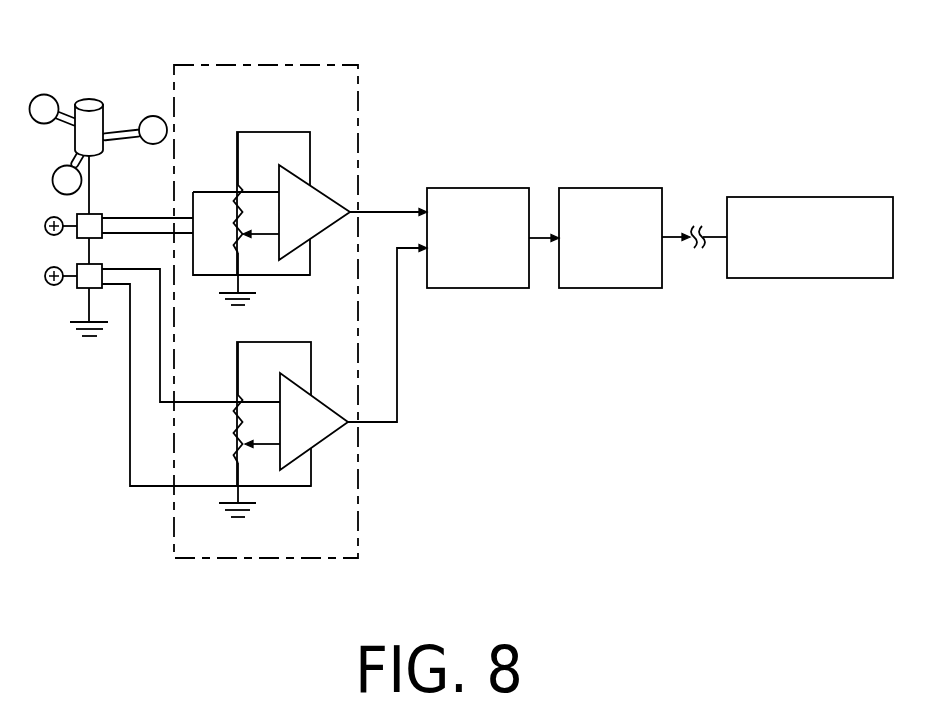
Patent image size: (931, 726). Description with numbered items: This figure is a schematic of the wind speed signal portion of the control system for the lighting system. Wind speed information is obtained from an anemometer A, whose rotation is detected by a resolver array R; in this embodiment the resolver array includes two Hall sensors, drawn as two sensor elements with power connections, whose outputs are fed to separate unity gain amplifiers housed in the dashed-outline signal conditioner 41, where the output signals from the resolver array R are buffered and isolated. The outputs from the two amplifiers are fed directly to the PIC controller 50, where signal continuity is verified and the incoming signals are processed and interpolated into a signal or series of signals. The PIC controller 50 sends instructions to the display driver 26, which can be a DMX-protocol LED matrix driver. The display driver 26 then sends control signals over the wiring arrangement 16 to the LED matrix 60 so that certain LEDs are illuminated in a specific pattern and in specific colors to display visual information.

The anemometer A is at (96, 88).
The resolver array R is at (43, 202).
The signal conditioning circuit 41 is at (358, 163).
The PIC controller 50 is at (492, 198).
The display driver 26 is at (595, 198).
The wiring arrangement 16 is at (714, 235).
The LED matrix 60 is at (807, 205).